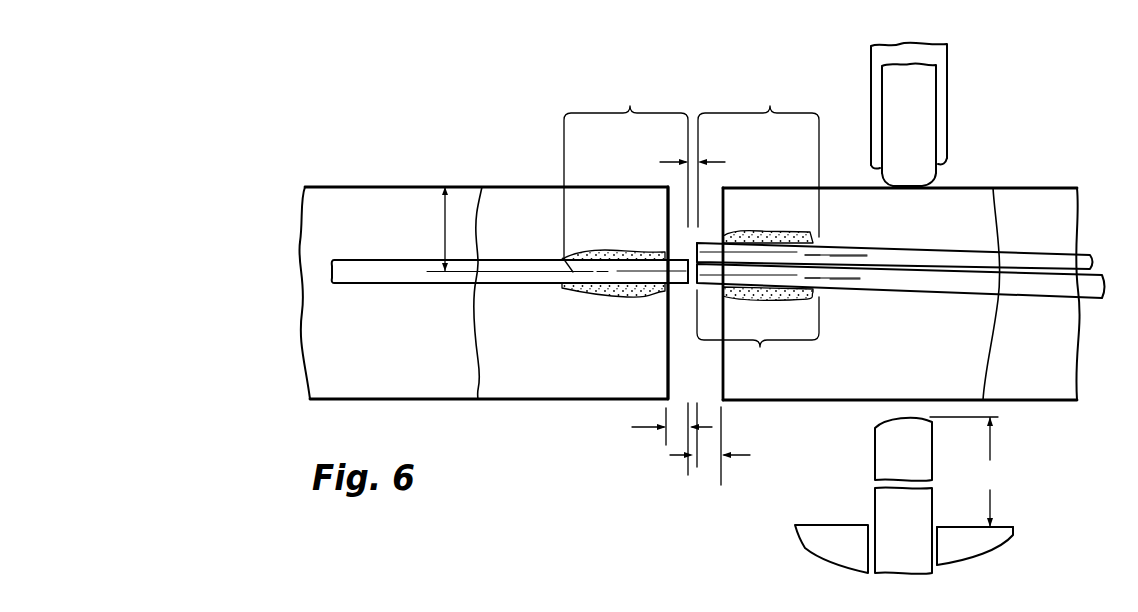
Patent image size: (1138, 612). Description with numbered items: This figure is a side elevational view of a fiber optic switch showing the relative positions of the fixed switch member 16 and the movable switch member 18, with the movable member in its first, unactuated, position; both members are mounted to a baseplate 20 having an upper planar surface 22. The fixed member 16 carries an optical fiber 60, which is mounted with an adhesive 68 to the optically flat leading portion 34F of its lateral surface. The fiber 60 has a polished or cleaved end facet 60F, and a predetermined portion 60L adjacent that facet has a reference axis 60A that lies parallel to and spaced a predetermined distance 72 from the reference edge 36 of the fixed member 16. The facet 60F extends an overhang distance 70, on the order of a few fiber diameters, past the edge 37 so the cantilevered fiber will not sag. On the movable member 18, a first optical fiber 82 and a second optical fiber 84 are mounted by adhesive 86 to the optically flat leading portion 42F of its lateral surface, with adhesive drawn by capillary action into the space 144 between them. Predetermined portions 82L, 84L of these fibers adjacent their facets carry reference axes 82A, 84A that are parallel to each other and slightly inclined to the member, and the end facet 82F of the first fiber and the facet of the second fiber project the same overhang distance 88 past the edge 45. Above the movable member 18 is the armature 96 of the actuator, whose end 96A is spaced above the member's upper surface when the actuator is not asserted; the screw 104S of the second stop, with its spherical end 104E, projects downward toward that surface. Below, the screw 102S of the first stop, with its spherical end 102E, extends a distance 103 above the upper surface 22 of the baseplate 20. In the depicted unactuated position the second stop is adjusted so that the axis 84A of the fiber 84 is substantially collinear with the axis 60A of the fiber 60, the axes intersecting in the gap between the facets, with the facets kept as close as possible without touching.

The fixed switch member 16 is at (306, 387).
The movable switch member 18 is at (1078, 400).
The baseplate 20 is at (973, 549).
The upper planar surface 22 is at (1072, 521).
The leading portion of lateral surface 34F is at (585, 379).
The reference edge 36 is at (482, 187).
The edge 37 is at (620, 279).
The leading portion of lateral surface 42F is at (944, 379).
The edge 45 is at (755, 279).
The optical fiber 60 is at (553, 284).
The reference axis 60A is at (563, 256).
The end facet 60F is at (688, 294).
The predetermined portion of fiber 60L is at (626, 169).
The adhesive 68 is at (633, 295).
The overhang distance 70 is at (676, 428).
The predetermined distance 72 is at (439, 229).
The first optical fiber 82 is at (843, 243).
The reference axis 82A is at (823, 254).
The end facet 82F is at (697, 243).
The predetermined portion of first fiber 82L is at (758, 159).
The second optical fiber 84 is at (843, 281).
The reference axis 84A is at (860, 281).
The predetermined portion of second fiber 84L is at (758, 335).
The adhesive 86 is at (750, 293).
The overhang distance 88 is at (707, 456).
The armature 96 is at (947, 62).
The armature end 96A is at (938, 163).
The spherically shaped end 102E is at (889, 417).
The screw 102S is at (893, 512).
The distance 103 is at (970, 472).
The spherical shaped end 104E is at (917, 187).
The screw 104S is at (936, 95).
The space 144 is at (671, 168).